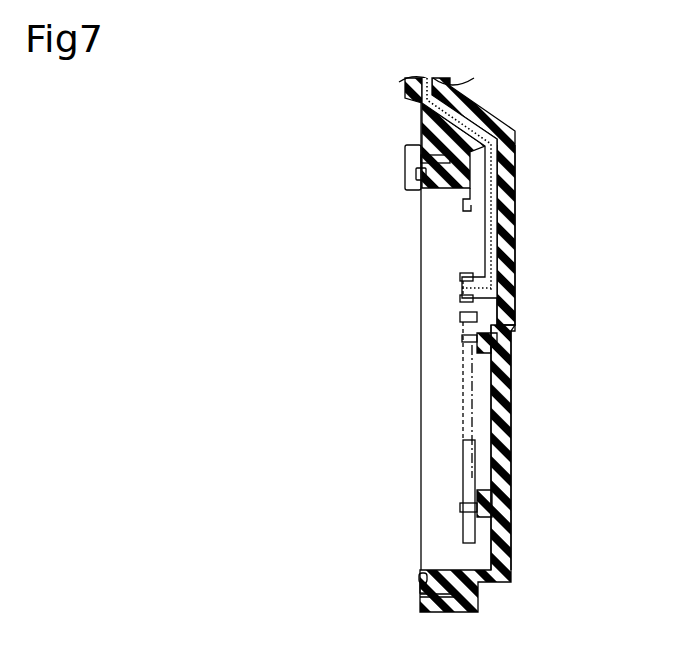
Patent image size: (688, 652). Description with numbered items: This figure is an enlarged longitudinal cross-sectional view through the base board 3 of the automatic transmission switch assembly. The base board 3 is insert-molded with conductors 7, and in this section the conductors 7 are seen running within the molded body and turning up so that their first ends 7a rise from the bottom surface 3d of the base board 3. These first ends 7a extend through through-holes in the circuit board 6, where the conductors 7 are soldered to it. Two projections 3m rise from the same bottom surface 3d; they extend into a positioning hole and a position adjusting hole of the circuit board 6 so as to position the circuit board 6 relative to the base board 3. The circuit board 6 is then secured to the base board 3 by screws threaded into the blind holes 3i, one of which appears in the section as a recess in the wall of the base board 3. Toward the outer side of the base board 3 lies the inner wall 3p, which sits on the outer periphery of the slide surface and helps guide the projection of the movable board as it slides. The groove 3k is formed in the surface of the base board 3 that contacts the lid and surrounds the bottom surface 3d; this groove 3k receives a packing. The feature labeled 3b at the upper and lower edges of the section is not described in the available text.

The base board 3 is at (513, 497).
The clip 3b is at (405, 152).
The groove 3k is at (416, 173).
The inner wall 3p is at (462, 194).
The projections 3m is at (460, 317).
The blind holes 3i is at (480, 338).
The bottom surface 3d is at (497, 422).
The circuit board 6 is at (472, 452).
The conductors 7 is at (505, 240).
The first ends 7a is at (460, 277).